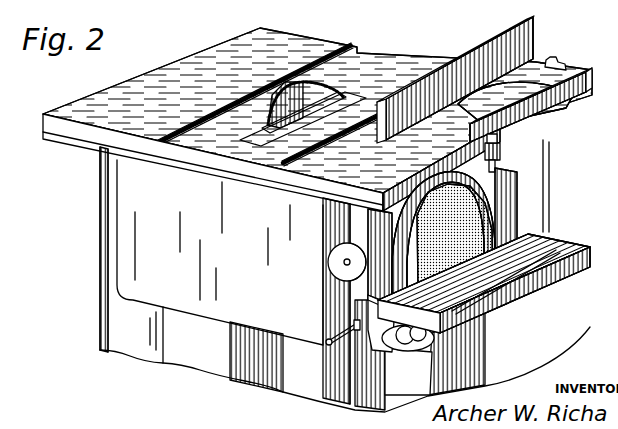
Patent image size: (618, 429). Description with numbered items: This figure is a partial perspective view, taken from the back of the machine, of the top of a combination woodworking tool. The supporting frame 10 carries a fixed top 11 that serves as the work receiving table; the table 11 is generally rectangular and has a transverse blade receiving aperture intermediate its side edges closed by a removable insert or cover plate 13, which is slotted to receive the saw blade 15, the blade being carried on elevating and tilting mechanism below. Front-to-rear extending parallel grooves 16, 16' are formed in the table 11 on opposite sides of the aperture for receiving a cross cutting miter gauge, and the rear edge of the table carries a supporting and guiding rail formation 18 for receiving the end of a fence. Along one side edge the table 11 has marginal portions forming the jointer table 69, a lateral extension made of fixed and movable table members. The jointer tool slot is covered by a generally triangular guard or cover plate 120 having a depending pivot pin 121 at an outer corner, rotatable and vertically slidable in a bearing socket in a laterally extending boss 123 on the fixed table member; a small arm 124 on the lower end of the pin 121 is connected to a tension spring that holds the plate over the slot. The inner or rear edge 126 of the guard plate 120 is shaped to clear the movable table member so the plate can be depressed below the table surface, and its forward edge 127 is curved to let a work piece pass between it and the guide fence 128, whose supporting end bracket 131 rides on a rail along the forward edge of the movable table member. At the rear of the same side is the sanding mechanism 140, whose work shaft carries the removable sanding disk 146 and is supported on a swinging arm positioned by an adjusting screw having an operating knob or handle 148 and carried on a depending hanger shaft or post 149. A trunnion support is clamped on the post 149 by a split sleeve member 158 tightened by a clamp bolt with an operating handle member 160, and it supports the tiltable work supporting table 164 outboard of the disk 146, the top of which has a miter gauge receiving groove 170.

The supporting frame 10 is at (100, 238).
The fixed top 11 is at (268, 45).
The removable insert or cover plate 13 is at (237, 133).
The saw blade 15 is at (305, 90).
The groove 16 is at (251, 94).
The groove 16' is at (357, 119).
The rail formation 18 is at (186, 166).
The jointer table 69 is at (572, 81).
The guard or cover plate 120 is at (566, 103).
The pivot pin 121 is at (497, 168).
The boss 123 is at (487, 202).
The arm 124 is at (503, 158).
The inner or rear edge 126 is at (480, 126).
The forward edge 127 is at (520, 93).
The guide fence 128 is at (495, 40).
The supporting end bracket 131 is at (558, 63).
The sanding mechanism 140 is at (512, 225).
The sanding plate or disk 146 is at (487, 218).
The operating knob or handle 148 is at (336, 260).
The hanger shaft or post 149 is at (367, 222).
The split sleeve member 158 is at (373, 348).
The operating handle member 160 is at (290, 353).
The tiltable work supporting table 164 is at (547, 285).
The miter gauge receiving recess or groove 170 is at (563, 247).